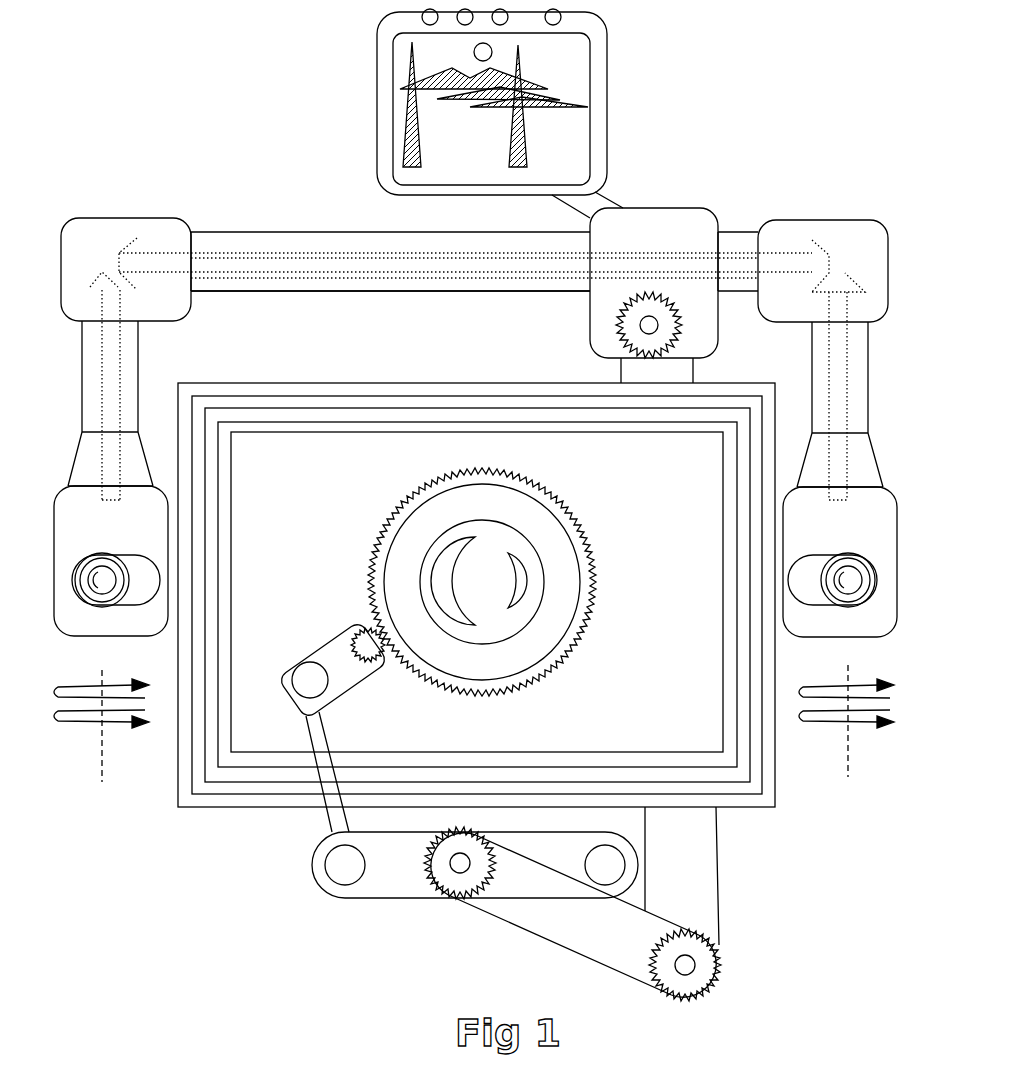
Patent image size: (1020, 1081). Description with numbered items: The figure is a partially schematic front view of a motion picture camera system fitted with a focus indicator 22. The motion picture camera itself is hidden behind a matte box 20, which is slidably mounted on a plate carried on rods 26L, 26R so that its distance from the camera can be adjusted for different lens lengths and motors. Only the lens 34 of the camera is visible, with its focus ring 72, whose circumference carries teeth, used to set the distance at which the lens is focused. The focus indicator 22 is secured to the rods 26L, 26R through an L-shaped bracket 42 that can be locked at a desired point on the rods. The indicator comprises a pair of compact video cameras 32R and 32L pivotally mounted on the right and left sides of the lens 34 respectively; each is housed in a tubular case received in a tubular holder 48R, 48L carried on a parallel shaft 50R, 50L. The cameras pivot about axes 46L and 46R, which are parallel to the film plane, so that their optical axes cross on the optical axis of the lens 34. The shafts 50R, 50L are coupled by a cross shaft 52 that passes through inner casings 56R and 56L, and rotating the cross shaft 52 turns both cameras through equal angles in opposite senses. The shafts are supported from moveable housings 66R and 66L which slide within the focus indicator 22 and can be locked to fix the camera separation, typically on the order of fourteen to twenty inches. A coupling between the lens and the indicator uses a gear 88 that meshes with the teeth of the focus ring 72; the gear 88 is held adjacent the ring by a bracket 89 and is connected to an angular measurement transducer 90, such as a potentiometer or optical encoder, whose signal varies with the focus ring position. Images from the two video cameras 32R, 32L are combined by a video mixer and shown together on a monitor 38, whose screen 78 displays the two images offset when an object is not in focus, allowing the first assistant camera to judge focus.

The matte box 20 is at (258, 775).
The focus indicator 22 is at (335, 287).
The rod 26L is at (343, 867).
The rod 26R is at (602, 870).
The video camera 32L is at (140, 587).
The video camera 32R is at (812, 573).
The lens 34 is at (543, 523).
The monitor 38 is at (598, 60).
The L-shaped bracket 42 is at (402, 873).
The axis 46L is at (107, 783).
The axis 46R is at (842, 760).
The tubular holder 48L is at (90, 532).
The tubular holder 48R is at (883, 515).
The shaft 50L is at (113, 362).
The shaft 50R is at (835, 355).
The cross shaft 52 is at (290, 265).
The inner casing 56L is at (218, 278).
The inner casing 56R is at (740, 275).
The moveable housing 66L is at (130, 228).
The moveable housing 66R is at (840, 232).
The focus ring 72 is at (585, 610).
The monitor screen 78 is at (565, 125).
The gear 88 is at (355, 643).
The bracket 89 is at (320, 726).
The angular measurement transducer 90 is at (358, 668).